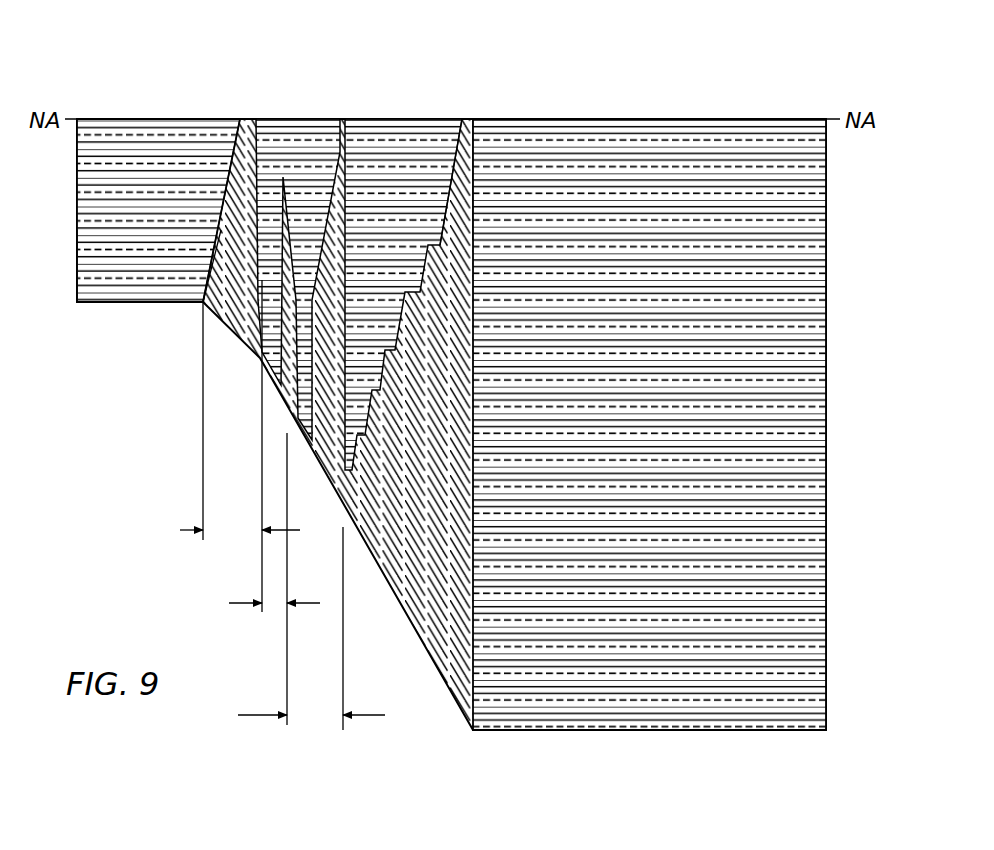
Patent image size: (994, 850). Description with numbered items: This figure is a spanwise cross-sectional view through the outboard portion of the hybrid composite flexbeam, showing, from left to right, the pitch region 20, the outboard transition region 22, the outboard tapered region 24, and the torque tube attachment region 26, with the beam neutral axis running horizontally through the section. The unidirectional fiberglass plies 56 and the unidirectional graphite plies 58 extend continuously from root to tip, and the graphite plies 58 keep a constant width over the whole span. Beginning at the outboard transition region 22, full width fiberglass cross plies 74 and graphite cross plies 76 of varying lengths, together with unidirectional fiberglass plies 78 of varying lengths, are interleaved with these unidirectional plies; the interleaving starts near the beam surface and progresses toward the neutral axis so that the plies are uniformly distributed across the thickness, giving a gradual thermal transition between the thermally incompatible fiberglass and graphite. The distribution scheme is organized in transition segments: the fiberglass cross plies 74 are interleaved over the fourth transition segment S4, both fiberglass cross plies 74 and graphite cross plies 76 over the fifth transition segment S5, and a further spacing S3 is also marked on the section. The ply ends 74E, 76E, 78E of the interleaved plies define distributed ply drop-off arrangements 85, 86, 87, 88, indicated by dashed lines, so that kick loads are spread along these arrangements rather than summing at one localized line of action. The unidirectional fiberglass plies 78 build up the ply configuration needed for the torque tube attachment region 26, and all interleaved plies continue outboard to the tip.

The pitch region 20 is at (138, 105).
The outboard transition region 22 is at (202, 105).
The outboard tapered region 24 is at (472, 45).
The torque tube attachment region 26 is at (826, 119).
The unidirectional fiberglass plies 56 is at (94, 173).
The unidirectional graphite plies 58 is at (100, 277).
The fiberglass cross plies 74 is at (205, 301).
The fiberglass cross ply ends 74E is at (236, 142).
The graphite cross plies 76 is at (290, 168).
The graphite cross ply ends 76E is at (439, 243).
The unidirectional fiberglass plies 78 is at (478, 187).
The unidirectional fiberglass ply ends 78E is at (443, 197).
The distributed ply drop-off arrangement 85 is at (199, 330).
The distributed ply drop-off arrangement 86 is at (260, 375).
The distributed ply drop-off arrangement 87 is at (283, 427).
The distributed ply drop-off arrangement 88 is at (328, 513).
The ply drop spacing S3 is at (311, 714).
The fourth transition segment S4 is at (240, 529).
The fifth transition segment S5 is at (259, 603).